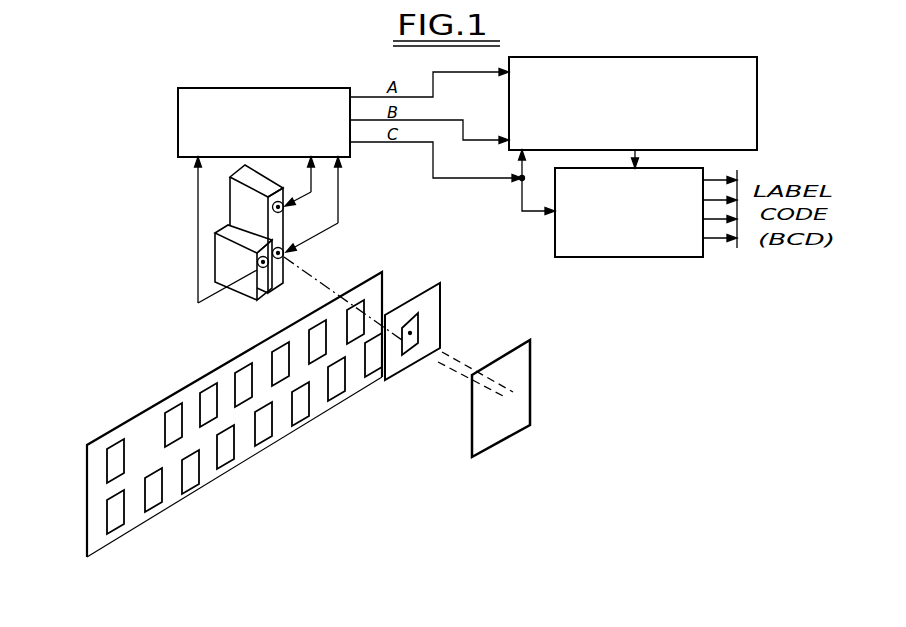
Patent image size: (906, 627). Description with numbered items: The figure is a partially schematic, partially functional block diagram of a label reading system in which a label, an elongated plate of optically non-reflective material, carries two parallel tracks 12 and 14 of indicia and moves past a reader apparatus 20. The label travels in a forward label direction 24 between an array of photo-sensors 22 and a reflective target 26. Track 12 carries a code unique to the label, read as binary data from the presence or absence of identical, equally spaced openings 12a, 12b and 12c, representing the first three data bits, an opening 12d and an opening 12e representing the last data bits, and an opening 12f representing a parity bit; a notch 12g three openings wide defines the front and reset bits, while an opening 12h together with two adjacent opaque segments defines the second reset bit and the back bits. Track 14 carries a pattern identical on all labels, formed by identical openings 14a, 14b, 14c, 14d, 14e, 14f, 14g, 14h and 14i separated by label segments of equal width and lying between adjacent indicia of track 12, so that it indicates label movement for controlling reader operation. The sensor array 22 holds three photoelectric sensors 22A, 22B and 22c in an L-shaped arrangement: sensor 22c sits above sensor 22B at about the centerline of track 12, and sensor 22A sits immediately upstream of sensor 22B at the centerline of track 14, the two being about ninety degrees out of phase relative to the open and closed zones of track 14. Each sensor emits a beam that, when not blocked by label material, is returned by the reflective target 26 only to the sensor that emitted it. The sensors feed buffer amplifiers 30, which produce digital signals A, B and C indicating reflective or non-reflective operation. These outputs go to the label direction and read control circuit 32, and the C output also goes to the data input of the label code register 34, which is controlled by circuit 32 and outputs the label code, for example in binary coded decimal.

The track 12 is at (93, 468).
The opening 12a is at (358, 305).
The opening 12b is at (318, 330).
The opening 12c is at (281, 350).
The opening 12d is at (243, 377).
The opening 12e is at (205, 390).
The opening 12f is at (170, 418).
The notch 12g is at (412, 265).
The opening 12h is at (117, 447).
The track 14 is at (94, 523).
The opening 14a is at (418, 325).
The opening 14b is at (376, 368).
The opening 14c is at (340, 390).
The opening 14d is at (297, 412).
The opening 14e is at (265, 433).
The opening 14f is at (226, 465).
The opening 14g is at (190, 486).
The opening 14h is at (152, 512).
The opening 14i is at (117, 528).
The reader apparatus 20 is at (165, 146).
The array of photo-sensors 22 is at (183, 253).
The photoelectric sensor 22A is at (252, 292).
The photoelectric sensor 22B is at (286, 246).
The photoelectric sensor 22c is at (238, 197).
The forward label direction 24 is at (491, 263).
The reflective target 26 is at (507, 428).
The buffer amplifiers 30 is at (267, 97).
The label direction and read control circuit 32 is at (657, 62).
The label code register 34 is at (628, 247).